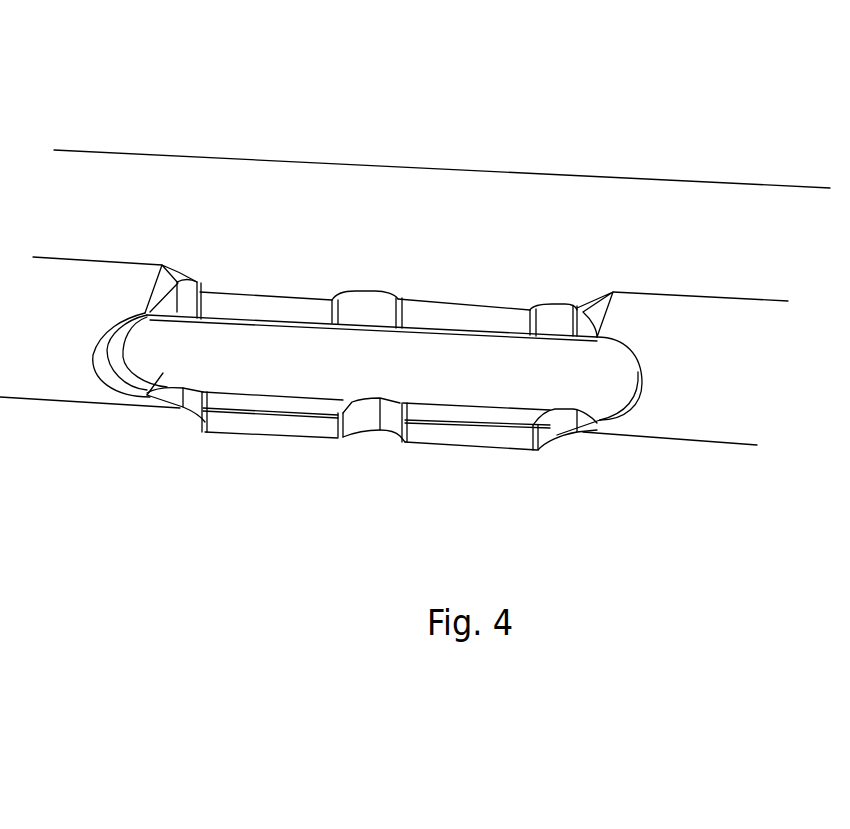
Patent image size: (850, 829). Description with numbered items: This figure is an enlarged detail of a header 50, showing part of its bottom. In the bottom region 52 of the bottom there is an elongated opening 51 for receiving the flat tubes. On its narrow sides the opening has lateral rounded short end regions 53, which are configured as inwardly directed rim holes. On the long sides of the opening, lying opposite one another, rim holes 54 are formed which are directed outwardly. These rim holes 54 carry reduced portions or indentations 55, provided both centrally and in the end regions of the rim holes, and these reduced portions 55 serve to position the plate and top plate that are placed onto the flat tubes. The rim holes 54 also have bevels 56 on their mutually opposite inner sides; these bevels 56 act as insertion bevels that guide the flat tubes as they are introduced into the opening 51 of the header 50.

The header 50 is at (603, 202).
The opening 51 is at (237, 340).
The bottom region 52 is at (53, 270).
The lateral rounded short end regions 53 is at (130, 360).
The rim holes 54 is at (293, 298).
The reduced portions or indentations 55 is at (197, 288).
The bevels 56 is at (472, 340).